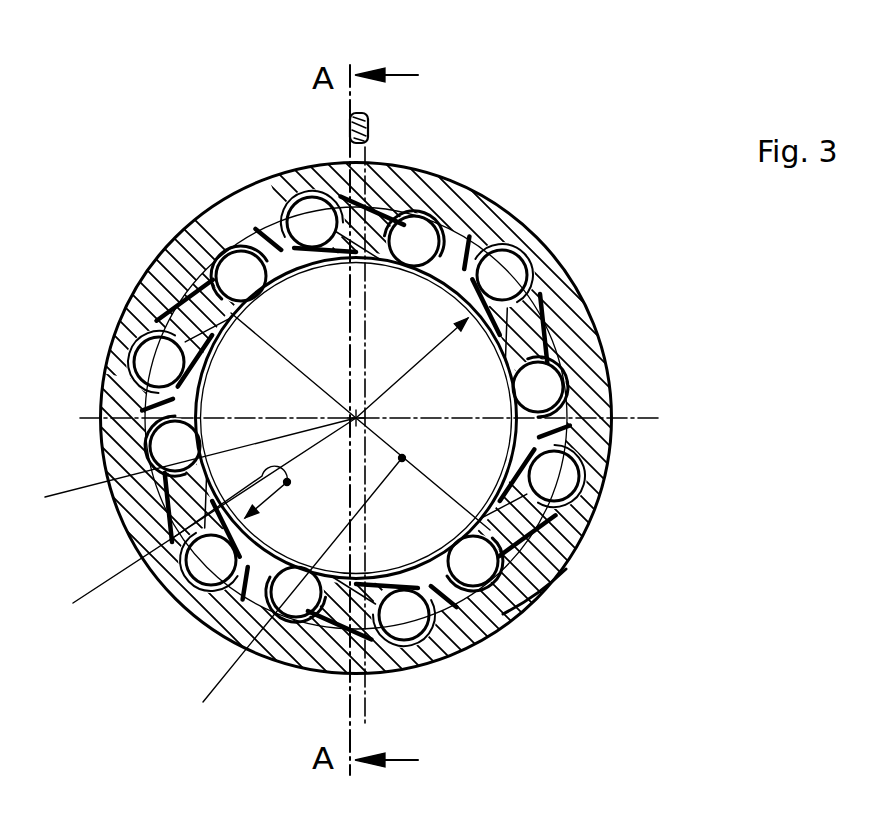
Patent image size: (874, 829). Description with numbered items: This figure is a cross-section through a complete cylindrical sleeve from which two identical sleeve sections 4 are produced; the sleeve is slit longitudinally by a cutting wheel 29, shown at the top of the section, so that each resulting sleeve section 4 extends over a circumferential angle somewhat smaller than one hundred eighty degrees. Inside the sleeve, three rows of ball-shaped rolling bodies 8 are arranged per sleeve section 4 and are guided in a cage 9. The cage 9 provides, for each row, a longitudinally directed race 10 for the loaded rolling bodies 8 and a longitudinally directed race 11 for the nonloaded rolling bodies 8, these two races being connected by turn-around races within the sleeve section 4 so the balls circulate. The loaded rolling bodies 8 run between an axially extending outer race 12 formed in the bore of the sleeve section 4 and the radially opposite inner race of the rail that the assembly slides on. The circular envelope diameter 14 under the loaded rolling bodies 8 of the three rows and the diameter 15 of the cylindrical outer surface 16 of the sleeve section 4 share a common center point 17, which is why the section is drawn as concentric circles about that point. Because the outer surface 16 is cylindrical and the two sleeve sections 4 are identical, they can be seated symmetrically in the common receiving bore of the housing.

The sleeve section 4 is at (182, 232).
The rolling bodies 8 is at (416, 240).
The cage 9 is at (525, 518).
The race for the loaded rolling bodies 10 is at (374, 234).
The race for the nonloaded rolling bodies 11 is at (502, 272).
The outer race 12 is at (576, 480).
The envelope diameter 14 is at (201, 523).
The diameter of the cylindrical outer surface 15 is at (294, 592).
The cylindrical outer surface 16 is at (535, 607).
The common center point 17 is at (183, 468).
The cutting wheel 29 is at (372, 127).